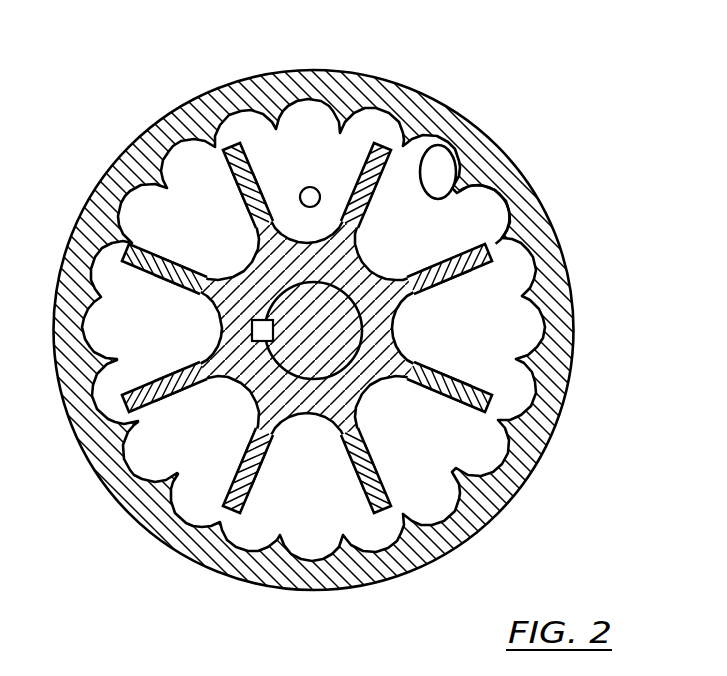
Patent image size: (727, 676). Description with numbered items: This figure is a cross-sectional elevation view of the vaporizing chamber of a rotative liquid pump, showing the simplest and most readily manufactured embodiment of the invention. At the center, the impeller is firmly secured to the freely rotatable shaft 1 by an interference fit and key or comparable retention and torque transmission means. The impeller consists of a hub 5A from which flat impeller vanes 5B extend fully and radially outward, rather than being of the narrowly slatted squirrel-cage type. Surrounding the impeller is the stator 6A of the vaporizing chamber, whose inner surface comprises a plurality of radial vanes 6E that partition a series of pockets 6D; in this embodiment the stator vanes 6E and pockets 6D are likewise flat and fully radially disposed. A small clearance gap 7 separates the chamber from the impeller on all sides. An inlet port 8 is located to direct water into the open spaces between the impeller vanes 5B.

The shaft 1 is at (347, 370).
The hub 5A is at (393, 330).
The vanes 5B is at (437, 283).
The stator 6A is at (542, 229).
The pockets 6D is at (500, 189).
The radial vanes 6E is at (445, 140).
The clearance gap 7 is at (233, 516).
The inlet port 8 is at (317, 189).